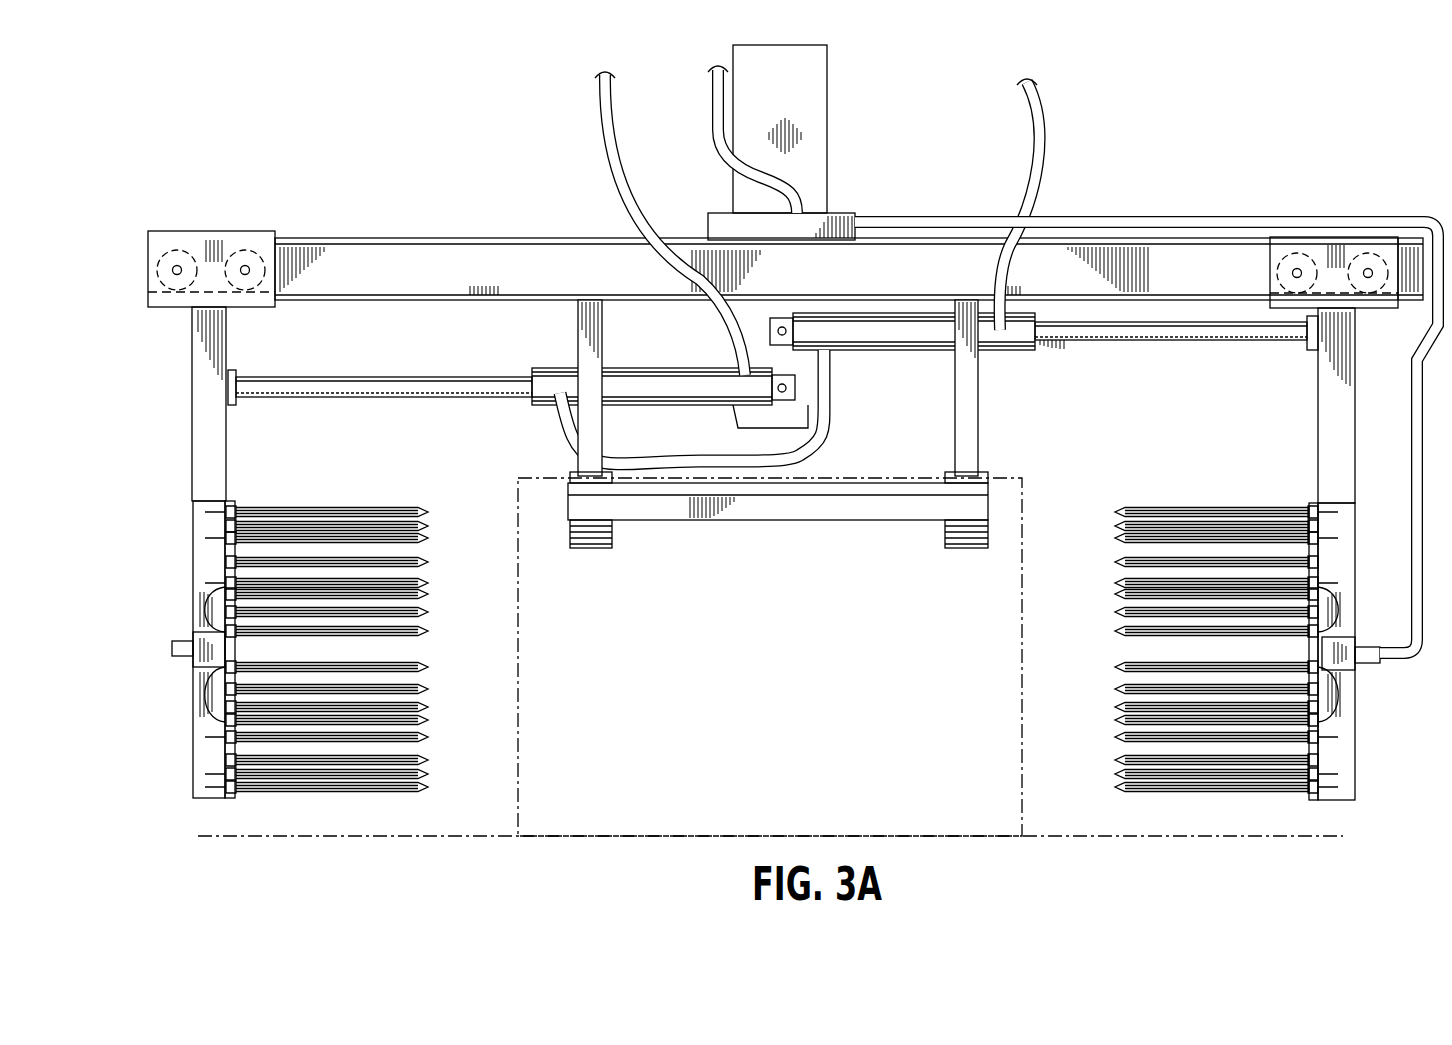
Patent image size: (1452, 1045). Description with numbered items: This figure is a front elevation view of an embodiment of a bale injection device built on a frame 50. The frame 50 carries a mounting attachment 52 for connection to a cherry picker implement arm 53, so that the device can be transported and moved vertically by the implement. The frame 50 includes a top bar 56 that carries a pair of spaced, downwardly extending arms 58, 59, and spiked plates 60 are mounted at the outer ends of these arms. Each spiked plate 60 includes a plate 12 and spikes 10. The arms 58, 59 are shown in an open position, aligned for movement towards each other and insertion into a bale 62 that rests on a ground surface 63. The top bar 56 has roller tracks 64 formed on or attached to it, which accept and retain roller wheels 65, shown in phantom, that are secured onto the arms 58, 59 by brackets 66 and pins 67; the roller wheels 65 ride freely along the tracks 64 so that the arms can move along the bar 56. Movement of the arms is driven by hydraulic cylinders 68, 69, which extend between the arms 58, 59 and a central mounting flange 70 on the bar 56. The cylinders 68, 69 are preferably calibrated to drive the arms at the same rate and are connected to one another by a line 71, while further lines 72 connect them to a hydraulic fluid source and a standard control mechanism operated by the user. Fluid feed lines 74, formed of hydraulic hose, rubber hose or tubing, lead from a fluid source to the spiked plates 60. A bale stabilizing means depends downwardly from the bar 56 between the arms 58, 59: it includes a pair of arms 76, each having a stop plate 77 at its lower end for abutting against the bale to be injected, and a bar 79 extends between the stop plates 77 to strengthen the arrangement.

The frame 50 is at (334, 206).
The top bar 56 is at (404, 260).
The roller tracks 64 is at (446, 290).
The brackets 66 is at (240, 308).
The roller wheels 65 is at (182, 250).
The pins 67 is at (246, 268).
The arm 58 is at (226, 447).
The arm 59 is at (1330, 492).
The spiked plates 60 is at (212, 804).
The plate 12 is at (276, 760).
The spikes 10 is at (372, 737).
The bale 62 is at (518, 780).
The ground surface 63 is at (1058, 836).
The cherry picker implement arm 53 is at (808, 148).
The mounting attachment 52 is at (750, 213).
The hydraulic cylinder 68 is at (540, 372).
The hydraulic cylinder 69 is at (1030, 346).
The central mounting flange 70 is at (840, 380).
The line 71 is at (572, 438).
The lines 72 is at (600, 116).
The fluid feed lines 74 is at (712, 142).
The arms 76 is at (562, 486).
The stop plate 77 is at (592, 548).
The bar 79 is at (752, 520).